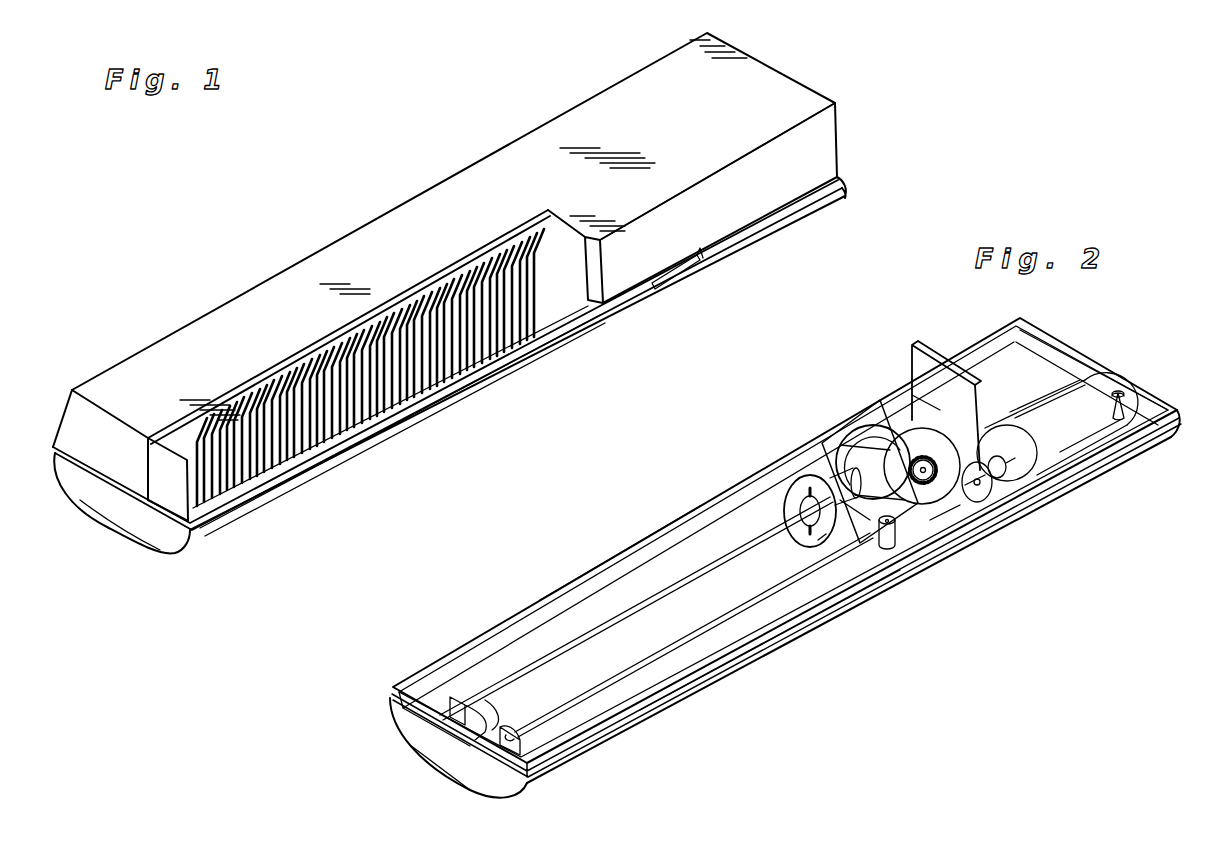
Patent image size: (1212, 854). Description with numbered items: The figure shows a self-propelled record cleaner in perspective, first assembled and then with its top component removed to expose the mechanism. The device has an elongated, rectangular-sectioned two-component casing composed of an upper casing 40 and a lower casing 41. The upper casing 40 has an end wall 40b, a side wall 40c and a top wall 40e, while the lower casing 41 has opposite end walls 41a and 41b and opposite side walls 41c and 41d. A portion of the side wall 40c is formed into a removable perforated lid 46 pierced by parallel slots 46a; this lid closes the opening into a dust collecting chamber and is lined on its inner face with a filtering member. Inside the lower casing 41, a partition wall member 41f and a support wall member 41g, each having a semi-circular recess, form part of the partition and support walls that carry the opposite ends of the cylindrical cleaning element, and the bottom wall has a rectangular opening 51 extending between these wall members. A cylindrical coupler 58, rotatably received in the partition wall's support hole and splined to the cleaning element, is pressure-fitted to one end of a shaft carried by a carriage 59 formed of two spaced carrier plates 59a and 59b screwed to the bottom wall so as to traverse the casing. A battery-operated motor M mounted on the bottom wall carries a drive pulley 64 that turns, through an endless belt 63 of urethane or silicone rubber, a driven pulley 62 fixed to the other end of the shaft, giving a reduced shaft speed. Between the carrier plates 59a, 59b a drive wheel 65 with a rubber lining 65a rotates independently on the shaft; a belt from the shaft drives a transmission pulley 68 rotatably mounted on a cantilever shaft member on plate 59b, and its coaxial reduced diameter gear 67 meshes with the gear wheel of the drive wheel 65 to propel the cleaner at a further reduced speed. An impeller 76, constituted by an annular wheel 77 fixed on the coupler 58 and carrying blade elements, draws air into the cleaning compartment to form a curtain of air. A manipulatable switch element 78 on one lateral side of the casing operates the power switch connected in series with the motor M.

In FIG. 1, the upper casing 40 is at (508, 266).
In FIG. 1, the end wall of upper casing 40b is at (64, 396).
In FIG. 1, the side wall of upper casing 40c is at (825, 148).
In FIG. 1, the top wall of upper casing 40e is at (393, 212).
In FIG. 1, the lower casing 41 is at (504, 381).
In FIG. 2, the lower casing 41 is at (749, 557).
In FIG. 2, the end wall of lower casing 41a is at (1096, 364).
In FIG. 1, the end wall of lower casing 41b is at (124, 520).
In FIG. 2, the end wall of lower casing 41b is at (413, 742).
In FIG. 1, the side wall of lower casing 41c is at (820, 208).
In FIG. 2, the side wall of lower casing 41c is at (724, 674).
In FIG. 2, the side wall of lower casing 41d is at (554, 590).
In FIG. 2, the partition wall member 41f is at (838, 488).
In FIG. 2, the support wall member 41g is at (454, 698).
In FIG. 1, the perforated lid 46 is at (364, 437).
In FIG. 1, the parallel slots 46a is at (263, 472).
In FIG. 2, the rectangular opening 51 is at (647, 610).
In FIG. 2, the cylindrical coupler 58 is at (824, 450).
In FIG. 2, the carriage 59 is at (910, 501).
In FIG. 2, the carrier plate 59a is at (905, 402).
In FIG. 2, the carrier plate 59b is at (867, 515).
In FIG. 2, the driven pulley 62 is at (923, 463).
In FIG. 2, the endless belt 63 is at (976, 490).
In FIG. 2, the drive pulley 64 is at (996, 474).
In FIG. 2, the drive wheel 65 is at (868, 417).
In FIG. 2, the rubber lining 65a is at (860, 440).
In FIG. 2, the reduced diameter gear 67 is at (928, 524).
In FIG. 2, the transmission pulley 68 is at (894, 528).
In FIG. 2, the impeller 76 is at (827, 548).
In FIG. 2, the annular wheel 77 is at (790, 505).
In FIG. 1, the manipulatable switch element 78 is at (689, 276).
In FIG. 2, the manipulatable switch element 78 is at (1038, 504).
In FIG. 2, the motor M is at (1084, 446).